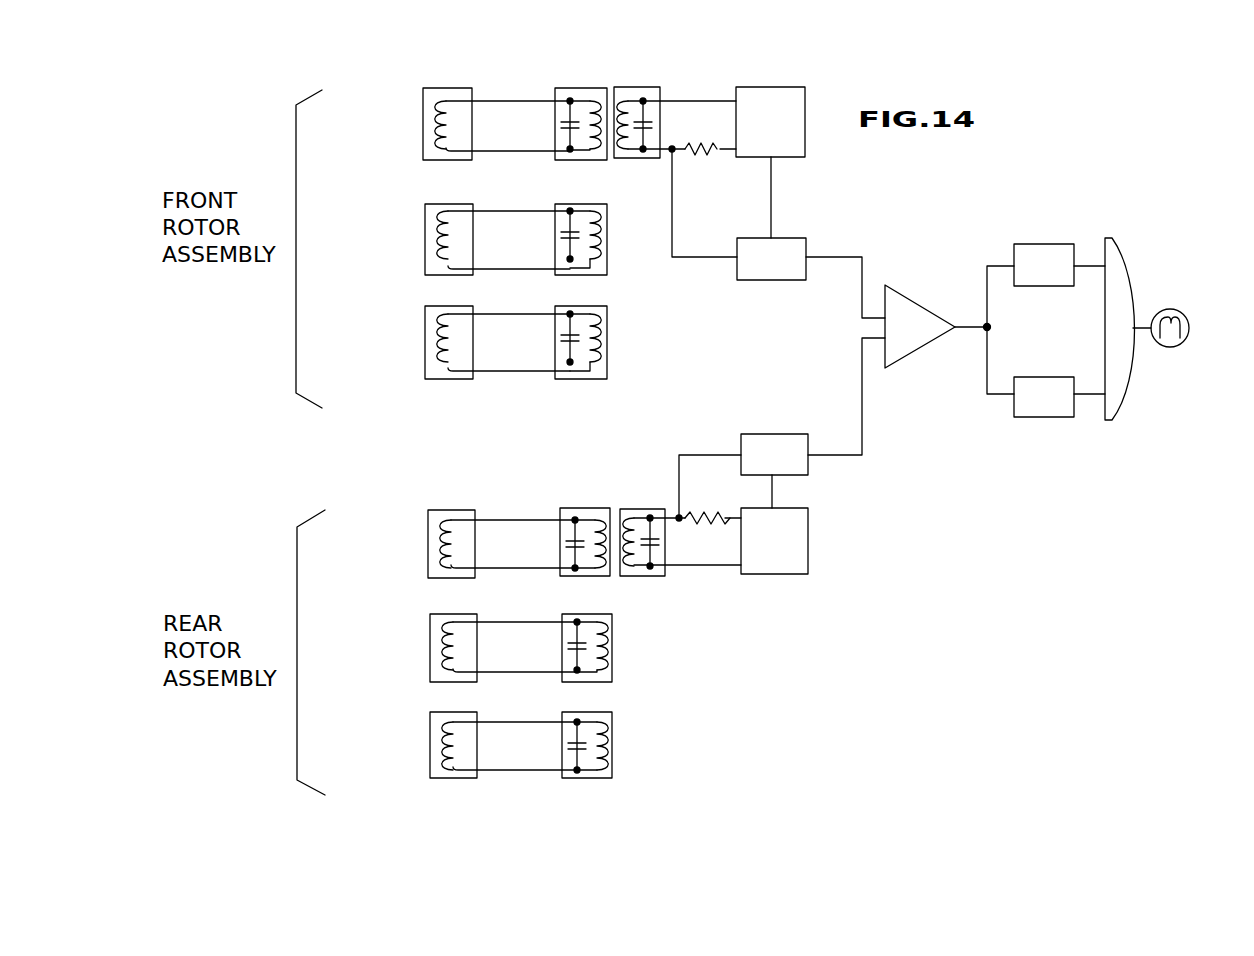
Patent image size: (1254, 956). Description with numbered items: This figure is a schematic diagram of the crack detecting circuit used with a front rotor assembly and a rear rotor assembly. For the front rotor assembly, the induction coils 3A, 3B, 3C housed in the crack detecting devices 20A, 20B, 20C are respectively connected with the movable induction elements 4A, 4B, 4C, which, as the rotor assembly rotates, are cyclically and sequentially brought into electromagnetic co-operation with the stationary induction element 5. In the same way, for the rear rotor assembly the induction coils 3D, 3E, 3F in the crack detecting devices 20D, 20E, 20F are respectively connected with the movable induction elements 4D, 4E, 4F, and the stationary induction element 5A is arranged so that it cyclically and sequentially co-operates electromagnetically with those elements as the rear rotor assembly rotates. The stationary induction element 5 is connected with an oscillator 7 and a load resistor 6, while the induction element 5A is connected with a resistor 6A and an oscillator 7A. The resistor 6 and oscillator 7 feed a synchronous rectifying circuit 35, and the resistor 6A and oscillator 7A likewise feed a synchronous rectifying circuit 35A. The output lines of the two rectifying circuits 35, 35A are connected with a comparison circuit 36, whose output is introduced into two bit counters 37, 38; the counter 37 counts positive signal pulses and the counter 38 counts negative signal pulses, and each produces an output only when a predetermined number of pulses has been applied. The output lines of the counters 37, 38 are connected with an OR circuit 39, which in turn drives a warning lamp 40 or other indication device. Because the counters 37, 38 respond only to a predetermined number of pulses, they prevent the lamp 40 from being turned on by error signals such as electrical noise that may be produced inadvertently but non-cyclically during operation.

The induction coil 3A is at (447, 99).
The induction coil 3B is at (447, 211).
The induction coil 3C is at (447, 321).
The induction coil 3D is at (447, 520).
The induction coil 3E is at (450, 622).
The induction coil 3F is at (450, 722).
The induction element 4A is at (591, 152).
The induction element 4B is at (591, 266).
The induction element 4C is at (591, 374).
The induction element 4D is at (594, 568).
The induction element 4E is at (596, 672).
The induction element 4F is at (596, 770).
The crack detecting device 20A is at (423, 125).
The crack detecting device 20B is at (423, 240).
The crack detecting device 20C is at (423, 350).
The crack detecting device 20D is at (439, 552).
The crack detecting device 20E is at (443, 654).
The crack detecting device 20F is at (443, 748).
The stationary induction element 5 is at (632, 88).
The stationary induction element 5A is at (645, 504).
The load resistor 6 is at (711, 156).
The resistor 6A is at (706, 526).
The oscillator 7 is at (778, 135).
The oscillator 7A is at (777, 553).
The synchronous rectifying circuit 35 is at (782, 272).
The synchronous rectifying circuit 35A is at (786, 468).
The comparison circuit 36 is at (918, 341).
The counter 37 is at (1054, 278).
The counter 38 is at (1054, 409).
The OR circuit 39 is at (1123, 280).
The warning lamp 40 is at (1168, 348).